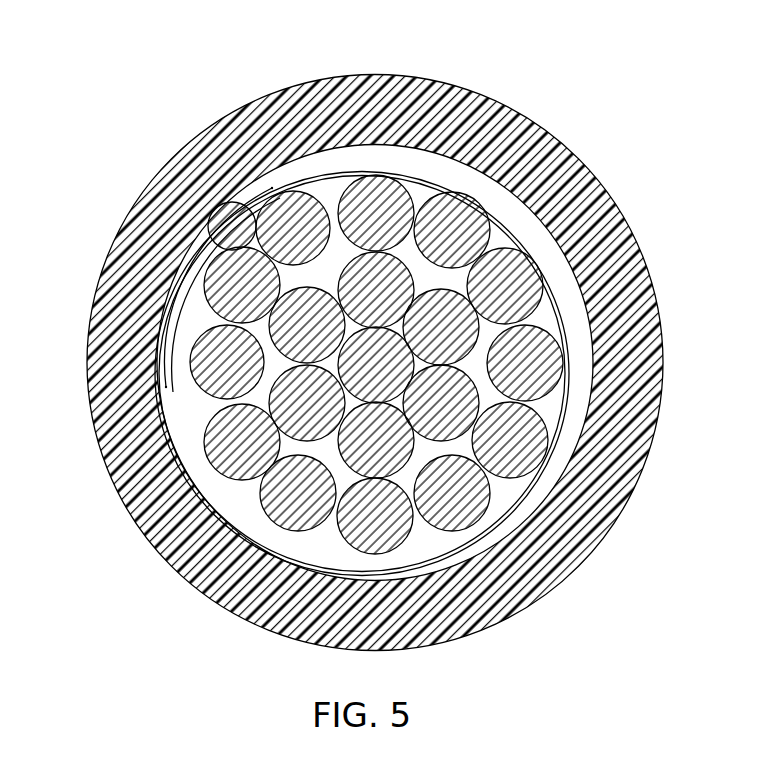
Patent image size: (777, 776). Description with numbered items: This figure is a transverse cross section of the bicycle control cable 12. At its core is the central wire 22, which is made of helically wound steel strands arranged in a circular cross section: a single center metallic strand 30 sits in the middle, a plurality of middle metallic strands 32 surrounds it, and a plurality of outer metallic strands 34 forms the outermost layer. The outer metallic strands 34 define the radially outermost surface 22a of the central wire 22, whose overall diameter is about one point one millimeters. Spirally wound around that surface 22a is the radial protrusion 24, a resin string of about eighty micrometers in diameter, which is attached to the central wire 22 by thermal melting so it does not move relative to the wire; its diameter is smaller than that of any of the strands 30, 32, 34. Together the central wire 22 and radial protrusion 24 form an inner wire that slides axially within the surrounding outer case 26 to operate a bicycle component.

The bicycle control cable 12 is at (371, 347).
The central wire 22 is at (559, 414).
The radially outermost surface 22a is at (541, 269).
The radial protrusion 24 is at (213, 208).
The outer case 26 is at (591, 565).
The center metallic strand 30 is at (358, 345).
The middle metallic strands 32 is at (300, 323).
The outer metallic strands 34 is at (243, 442).